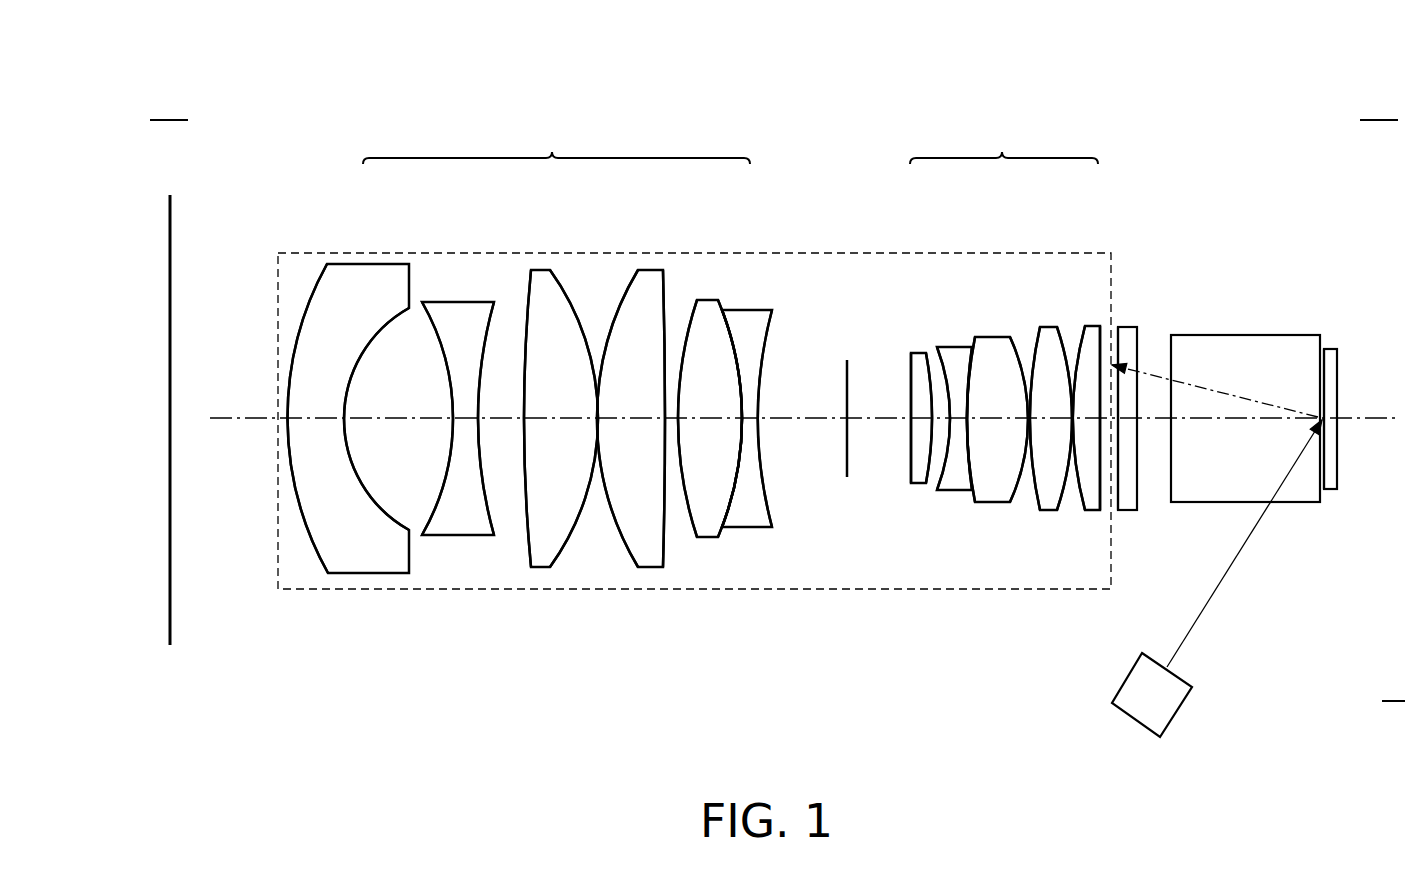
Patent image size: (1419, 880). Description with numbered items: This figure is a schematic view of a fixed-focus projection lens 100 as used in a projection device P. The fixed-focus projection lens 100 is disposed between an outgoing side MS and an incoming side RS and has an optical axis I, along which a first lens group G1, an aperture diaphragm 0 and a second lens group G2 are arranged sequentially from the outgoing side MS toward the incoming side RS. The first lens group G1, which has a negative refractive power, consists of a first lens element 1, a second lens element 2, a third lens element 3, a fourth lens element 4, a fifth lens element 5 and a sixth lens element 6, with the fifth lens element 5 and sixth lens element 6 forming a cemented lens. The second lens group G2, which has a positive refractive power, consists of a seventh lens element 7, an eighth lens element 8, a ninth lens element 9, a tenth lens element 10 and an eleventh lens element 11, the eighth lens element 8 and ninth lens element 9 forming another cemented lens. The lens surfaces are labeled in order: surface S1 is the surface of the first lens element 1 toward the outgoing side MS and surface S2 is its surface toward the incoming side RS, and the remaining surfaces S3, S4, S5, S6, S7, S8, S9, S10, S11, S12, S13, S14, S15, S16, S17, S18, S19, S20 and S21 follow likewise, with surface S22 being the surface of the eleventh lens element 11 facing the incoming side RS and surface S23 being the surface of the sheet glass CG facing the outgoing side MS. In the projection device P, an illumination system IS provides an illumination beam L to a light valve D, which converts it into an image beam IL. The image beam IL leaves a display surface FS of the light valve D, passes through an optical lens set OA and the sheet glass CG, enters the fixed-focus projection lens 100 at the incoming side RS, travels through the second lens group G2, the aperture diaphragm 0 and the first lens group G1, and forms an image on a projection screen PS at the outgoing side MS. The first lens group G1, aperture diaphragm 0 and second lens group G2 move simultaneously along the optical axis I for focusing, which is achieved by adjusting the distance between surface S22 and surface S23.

The fixed-focus projection lens 100 is at (277, 278).
The first lens element 1 is at (387, 263).
The second lens element 2 is at (465, 302).
The third lens element 3 is at (540, 270).
The fourth lens element 4 is at (648, 270).
The fifth lens element 5 is at (708, 300).
The sixth lens element 6 is at (757, 310).
The seventh lens element 7 is at (920, 353).
The eighth lens element 8 is at (955, 347).
The ninth lens element 9 is at (1000, 337).
The tenth lens element 10 is at (1040, 327).
The eleventh lens element 11 is at (1090, 326).
The aperture diaphragm 0 is at (847, 358).
The first lens group G1 is at (556, 140).
The second lens group G2 is at (1004, 140).
The surface S1 is at (317, 558).
The surface S2 is at (402, 532).
The surface S3 is at (422, 525).
The surface S4 is at (495, 530).
The surface S5 is at (527, 557).
The surface S6 is at (562, 555).
The surface S7 is at (627, 568).
The surface S8 is at (667, 555).
The surface S9 is at (683, 530).
The surface S10 is at (733, 530).
The surface S11 is at (730, 490).
The surface S12 is at (772, 510).
The surface S13 is at (910, 470).
The surface S14 is at (926, 470).
The surface S15 is at (940, 480).
The surface S16 is at (968, 470).
The surface S17 is at (975, 455).
The surface S18 is at (1015, 495).
The surface S19 is at (1033, 500).
The surface S20 is at (1065, 515).
The surface S21 is at (1080, 500).
The surface S22 is at (1103, 512).
The surface S23 is at (1117, 497).
The optical axis I is at (228, 416).
The projection screen PS is at (168, 225).
The outgoing side MS is at (169, 101).
The incoming side RS is at (1379, 101).
The projection device P is at (1393, 683).
The sheet glass CG is at (1128, 340).
The image beam IL is at (1150, 370).
The optical lens set OA is at (1245, 343).
The display surface FS is at (1325, 375).
The light valve D is at (1329, 478).
The illumination beam L is at (1210, 597).
The illumination system IS is at (1163, 707).